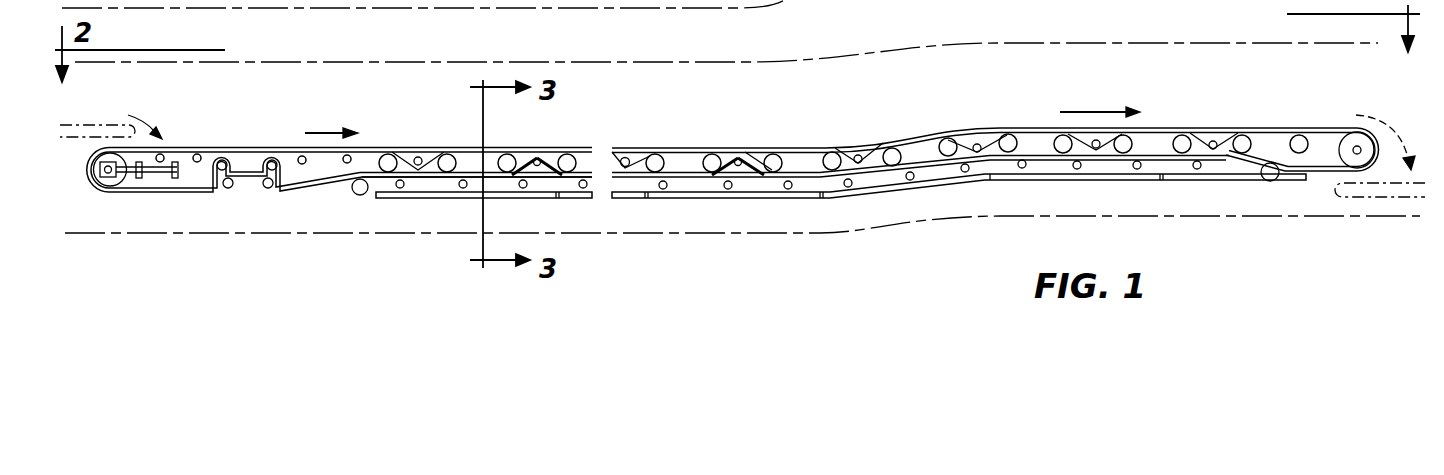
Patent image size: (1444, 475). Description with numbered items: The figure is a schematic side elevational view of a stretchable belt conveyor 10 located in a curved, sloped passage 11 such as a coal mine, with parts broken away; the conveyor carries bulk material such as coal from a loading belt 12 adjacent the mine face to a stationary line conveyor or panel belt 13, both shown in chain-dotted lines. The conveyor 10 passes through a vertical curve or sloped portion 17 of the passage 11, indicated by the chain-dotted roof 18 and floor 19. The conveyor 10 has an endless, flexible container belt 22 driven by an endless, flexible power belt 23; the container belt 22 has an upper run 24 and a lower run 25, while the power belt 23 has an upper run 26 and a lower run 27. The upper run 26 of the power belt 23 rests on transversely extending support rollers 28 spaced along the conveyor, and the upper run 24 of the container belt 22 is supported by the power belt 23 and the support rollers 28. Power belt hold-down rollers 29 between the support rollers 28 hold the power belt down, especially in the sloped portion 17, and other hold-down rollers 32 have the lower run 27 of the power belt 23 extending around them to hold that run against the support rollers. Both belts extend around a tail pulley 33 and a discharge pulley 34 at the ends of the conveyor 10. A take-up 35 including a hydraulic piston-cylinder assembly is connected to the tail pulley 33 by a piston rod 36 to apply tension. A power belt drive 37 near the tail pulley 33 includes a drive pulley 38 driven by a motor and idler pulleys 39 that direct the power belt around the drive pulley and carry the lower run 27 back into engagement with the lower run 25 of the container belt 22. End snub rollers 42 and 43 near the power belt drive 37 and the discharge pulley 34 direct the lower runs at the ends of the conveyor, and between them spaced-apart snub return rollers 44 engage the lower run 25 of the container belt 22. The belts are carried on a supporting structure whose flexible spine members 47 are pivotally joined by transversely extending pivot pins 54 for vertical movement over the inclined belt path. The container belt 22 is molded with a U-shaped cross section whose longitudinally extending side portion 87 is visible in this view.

The conveyor 10 is at (1033, 112).
The passage 11 is at (1141, 60).
The loading belt 12 is at (68, 118).
The panel belt 13 is at (1385, 200).
The sloped portion 17 is at (920, 212).
The roof 18 is at (1079, 42).
The floor 19 is at (1200, 218).
The container belt 22 is at (238, 147).
The power belt 23 is at (356, 147).
The upper run 24 is at (1231, 128).
The lower run 25 is at (497, 180).
The upper run 26 is at (1321, 130).
The lower run 27 is at (1107, 160).
The support rollers 28 is at (447, 154).
The power belt hold-down rollers 29 is at (418, 157).
The power belt hold-down rollers 32 is at (537, 157).
The tail pulley 33 is at (94, 170).
The discharge pulley 34 is at (1359, 144).
The take-up 35 is at (163, 164).
The piston rod 36 is at (124, 177).
The power belt drive 37 is at (250, 177).
The drive pulley 38 is at (269, 188).
The idler pulleys 39 is at (217, 160).
The end snub roller 42 is at (354, 190).
The end snub roller 43 is at (1266, 178).
The snub return rollers 44 is at (462, 188).
The flexible spine members 47 is at (385, 199).
The pivot pins 54 is at (558, 199).
The side portion 87 is at (757, 150).